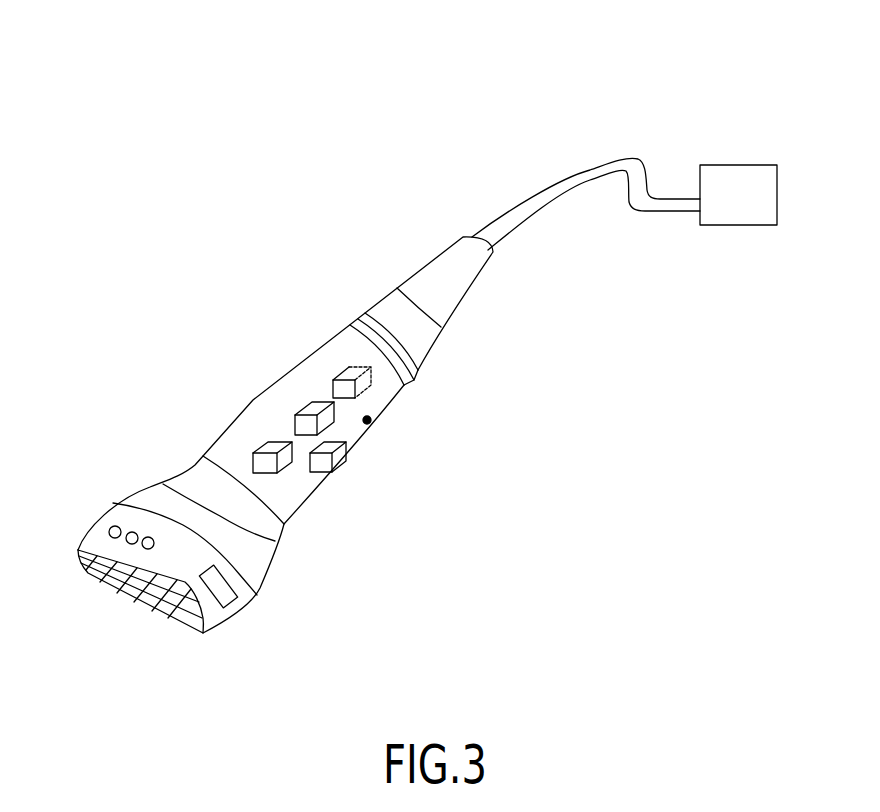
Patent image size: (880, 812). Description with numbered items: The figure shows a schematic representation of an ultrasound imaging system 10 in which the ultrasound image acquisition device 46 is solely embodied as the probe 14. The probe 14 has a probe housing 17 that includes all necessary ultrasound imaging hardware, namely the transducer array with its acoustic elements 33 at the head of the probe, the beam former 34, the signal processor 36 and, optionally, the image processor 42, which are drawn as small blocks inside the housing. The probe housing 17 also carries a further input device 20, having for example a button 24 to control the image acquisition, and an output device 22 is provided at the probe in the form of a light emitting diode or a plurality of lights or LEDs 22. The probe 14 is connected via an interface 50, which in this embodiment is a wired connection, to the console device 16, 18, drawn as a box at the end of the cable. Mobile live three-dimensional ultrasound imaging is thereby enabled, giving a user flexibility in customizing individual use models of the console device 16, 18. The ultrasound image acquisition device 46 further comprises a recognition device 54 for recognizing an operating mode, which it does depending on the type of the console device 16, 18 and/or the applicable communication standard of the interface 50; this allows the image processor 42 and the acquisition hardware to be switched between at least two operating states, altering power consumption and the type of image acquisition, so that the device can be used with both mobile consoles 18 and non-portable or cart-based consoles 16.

The ultrasound imaging system 10 is at (72, 110).
The probe 14 is at (358, 322).
The console device 16 is at (768, 173).
The console device 18 is at (738, 195).
The probe housing 17 is at (371, 422).
The input device 20 is at (128, 468).
The output device 22 is at (112, 527).
The button 24 is at (237, 603).
The acoustic elements 33 is at (157, 627).
The beam former 34 is at (262, 443).
The signal processor 36 is at (306, 401).
The image processor 42 is at (346, 368).
The ultrasound image acquisition device 46 is at (412, 547).
The interface 50 is at (655, 211).
The recognition device 54 is at (340, 452).